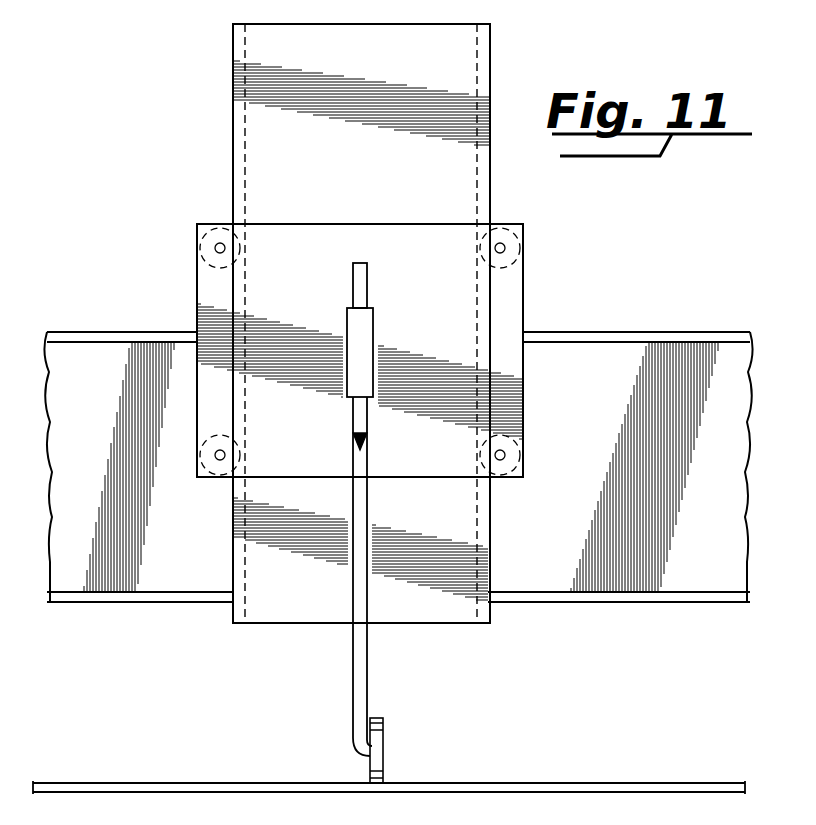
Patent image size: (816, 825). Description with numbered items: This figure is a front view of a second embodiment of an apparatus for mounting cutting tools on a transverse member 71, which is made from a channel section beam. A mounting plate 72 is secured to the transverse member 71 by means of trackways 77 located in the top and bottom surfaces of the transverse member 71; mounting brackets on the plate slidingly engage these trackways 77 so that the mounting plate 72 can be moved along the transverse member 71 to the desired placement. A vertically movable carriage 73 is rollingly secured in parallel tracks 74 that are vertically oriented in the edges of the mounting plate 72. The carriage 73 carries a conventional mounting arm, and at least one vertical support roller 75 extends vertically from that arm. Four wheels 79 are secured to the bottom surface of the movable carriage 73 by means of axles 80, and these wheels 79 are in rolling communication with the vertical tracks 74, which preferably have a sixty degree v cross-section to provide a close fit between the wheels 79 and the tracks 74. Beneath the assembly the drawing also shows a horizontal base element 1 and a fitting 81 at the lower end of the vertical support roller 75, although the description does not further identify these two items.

The floor 1 is at (550, 782).
The transverse member 71 is at (716, 494).
The mounting plate 72 is at (380, 166).
The vertically movable carriage 73 is at (440, 306).
The tracks 74 is at (238, 146).
The vertical support roller 75 is at (358, 662).
The trackways 77 is at (703, 331).
The wheels 79 is at (205, 232).
The axles 80 is at (215, 248).
The foot fitting 81 is at (383, 766).